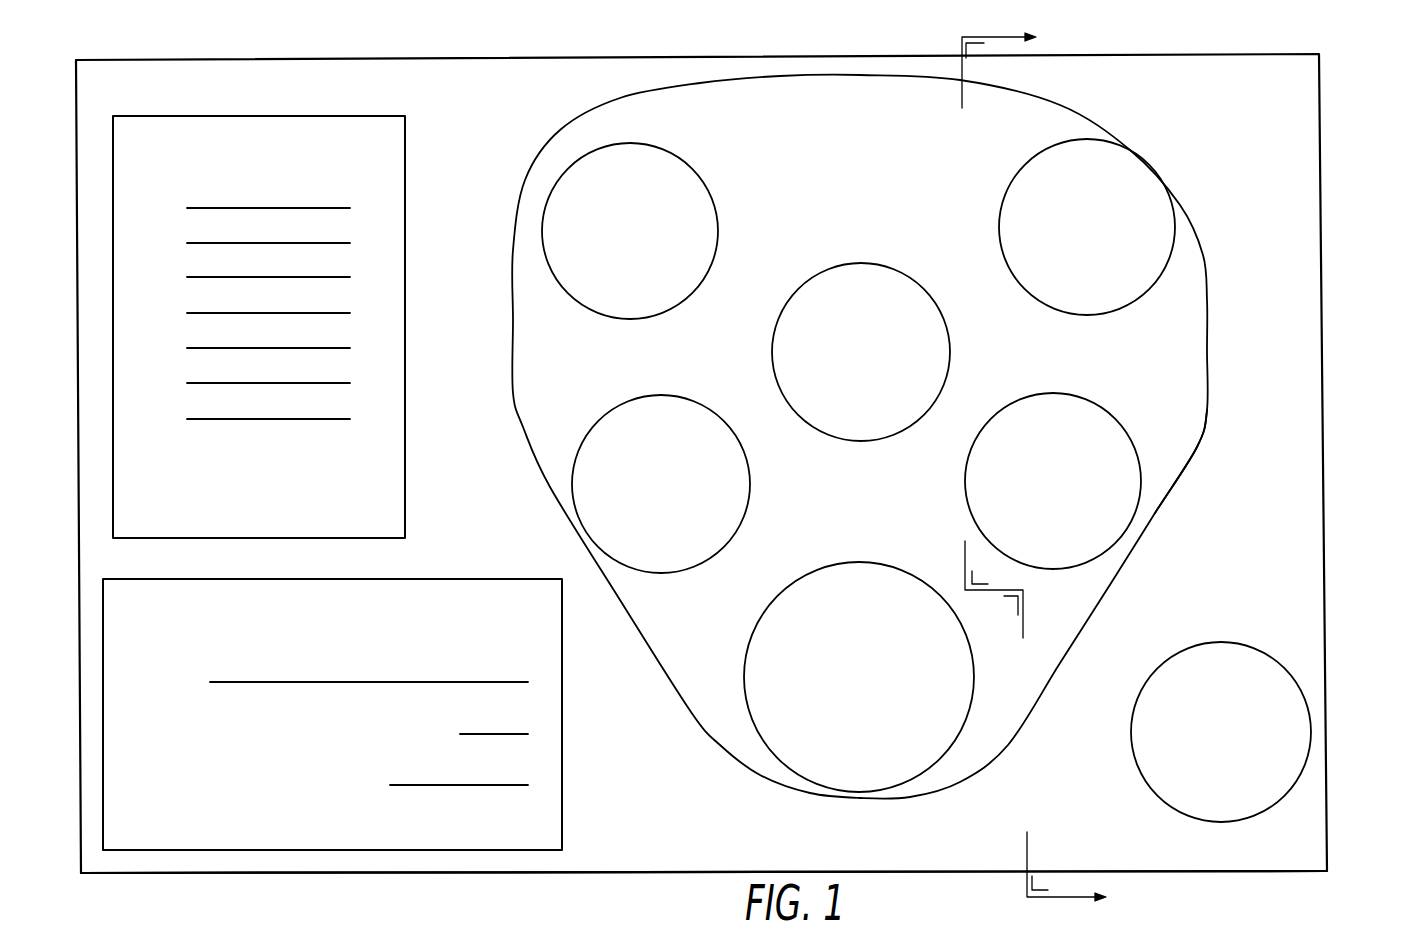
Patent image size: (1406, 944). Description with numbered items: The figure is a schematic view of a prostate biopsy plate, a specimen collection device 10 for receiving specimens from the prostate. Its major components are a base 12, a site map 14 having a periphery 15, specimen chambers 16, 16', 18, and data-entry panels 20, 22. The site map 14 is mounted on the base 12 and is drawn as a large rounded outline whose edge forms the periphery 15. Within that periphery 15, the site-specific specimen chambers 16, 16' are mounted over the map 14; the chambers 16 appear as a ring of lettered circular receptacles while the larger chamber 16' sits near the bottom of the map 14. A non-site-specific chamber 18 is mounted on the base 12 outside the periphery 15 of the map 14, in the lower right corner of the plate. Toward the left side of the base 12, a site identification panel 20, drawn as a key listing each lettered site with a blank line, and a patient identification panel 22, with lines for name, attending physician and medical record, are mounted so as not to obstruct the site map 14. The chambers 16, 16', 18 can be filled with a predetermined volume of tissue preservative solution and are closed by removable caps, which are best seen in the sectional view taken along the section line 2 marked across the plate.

The specimen collection device 10 is at (1345, 147).
The base 12 is at (922, 864).
The site map 14 is at (1186, 341).
The periphery 15 is at (1198, 440).
The specimen chambers 16 is at (895, 356).
The specimen chamber 16' is at (885, 677).
The non-site-specific chamber 18 is at (1140, 750).
The site identification panel 20 is at (393, 157).
The patient identification panel 22 is at (555, 713).
The section line for FIG. 2 is at (1043, 466).